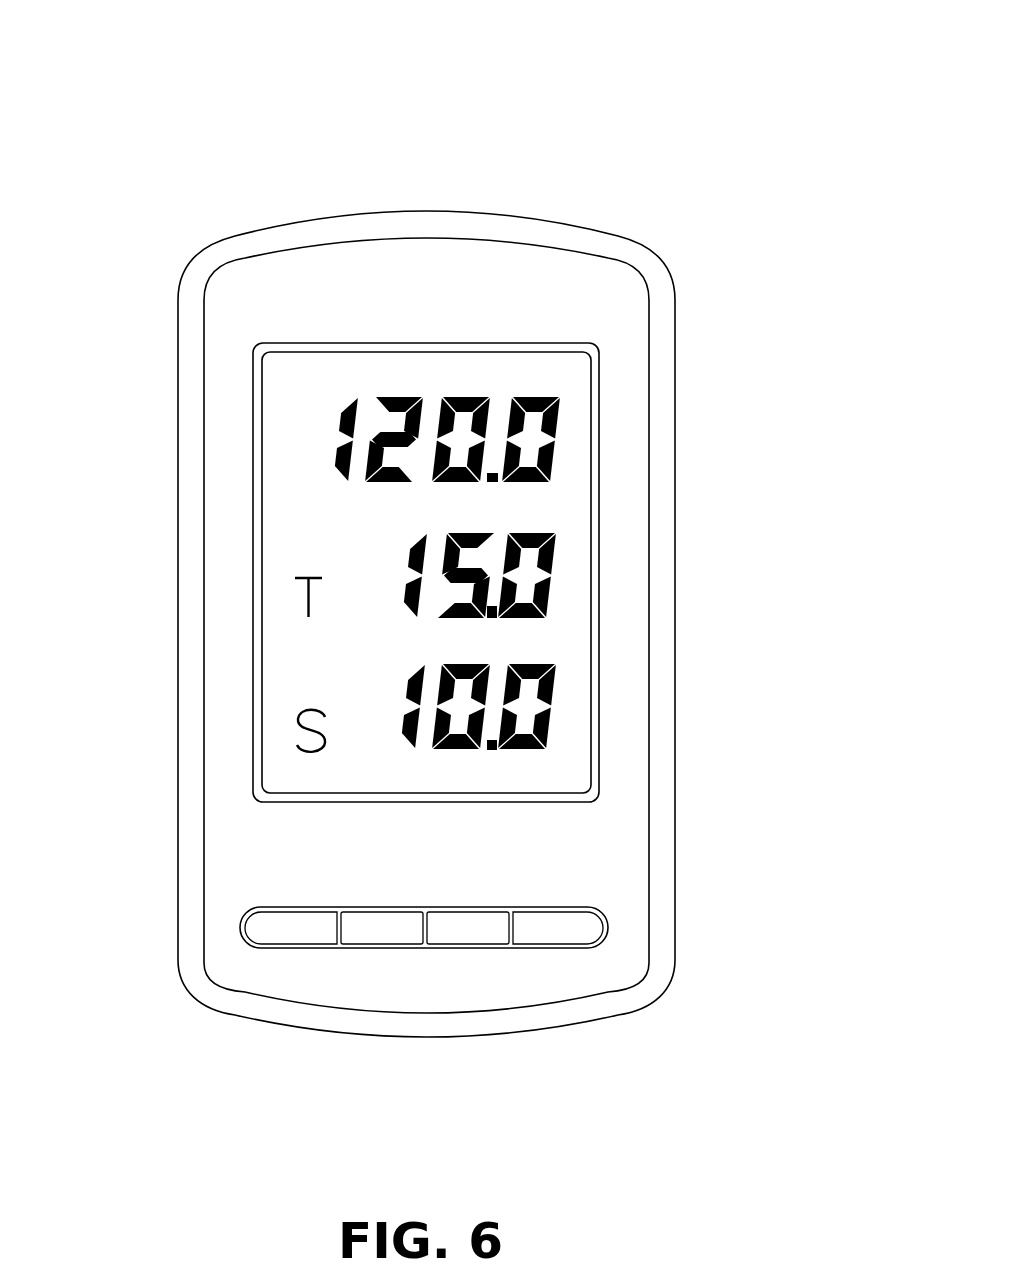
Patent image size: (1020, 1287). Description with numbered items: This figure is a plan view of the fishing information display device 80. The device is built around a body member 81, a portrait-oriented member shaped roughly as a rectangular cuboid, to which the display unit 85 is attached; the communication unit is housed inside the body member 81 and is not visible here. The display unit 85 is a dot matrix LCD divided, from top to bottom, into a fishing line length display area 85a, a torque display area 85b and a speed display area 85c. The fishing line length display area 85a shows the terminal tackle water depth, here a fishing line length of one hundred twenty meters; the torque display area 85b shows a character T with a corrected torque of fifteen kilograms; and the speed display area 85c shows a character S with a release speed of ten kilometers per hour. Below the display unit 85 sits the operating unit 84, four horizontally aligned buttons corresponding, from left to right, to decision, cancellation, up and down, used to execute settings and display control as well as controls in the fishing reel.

The fishing information display device 80 is at (585, 200).
The body member 81 is at (215, 718).
The operating unit 84 is at (278, 925).
The display unit 85 is at (275, 452).
The fishing line length display area 85a is at (569, 452).
The torque display area 85b is at (563, 587).
The speed display area 85c is at (558, 713).